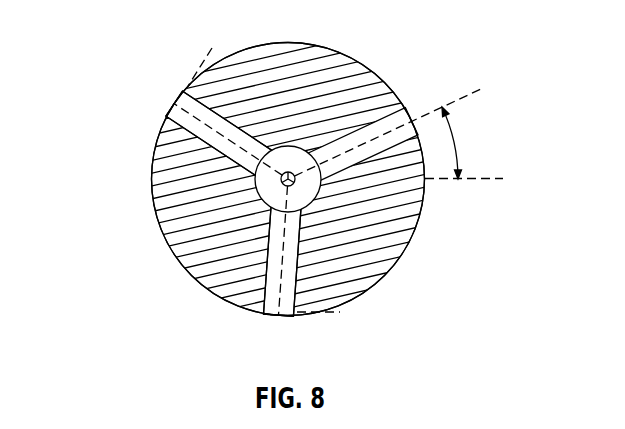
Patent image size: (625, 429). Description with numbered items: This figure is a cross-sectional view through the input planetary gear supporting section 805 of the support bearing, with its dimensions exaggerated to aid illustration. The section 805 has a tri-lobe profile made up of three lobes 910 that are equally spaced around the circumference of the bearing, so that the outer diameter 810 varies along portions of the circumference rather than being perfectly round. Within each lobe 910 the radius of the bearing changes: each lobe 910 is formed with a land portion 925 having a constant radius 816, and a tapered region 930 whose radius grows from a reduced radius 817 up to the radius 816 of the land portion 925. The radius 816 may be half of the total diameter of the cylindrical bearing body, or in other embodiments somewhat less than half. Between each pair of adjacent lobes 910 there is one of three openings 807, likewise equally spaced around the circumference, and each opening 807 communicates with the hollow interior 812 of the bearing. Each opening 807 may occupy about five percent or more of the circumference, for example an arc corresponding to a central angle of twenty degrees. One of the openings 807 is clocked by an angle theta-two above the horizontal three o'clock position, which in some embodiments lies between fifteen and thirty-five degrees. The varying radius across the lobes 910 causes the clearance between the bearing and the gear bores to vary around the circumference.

The input planetary gear supporting section 805 is at (85, 55).
The openings 807 is at (173, 114).
The outer diameter 810 is at (387, 278).
The hollow interior 812 is at (289, 171).
The radius 816 is at (168, 149).
The reduced radius 817 is at (277, 268).
The lobes 910 is at (141, 209).
The land portion 925 is at (245, 46).
The tapered region 930 is at (153, 164).